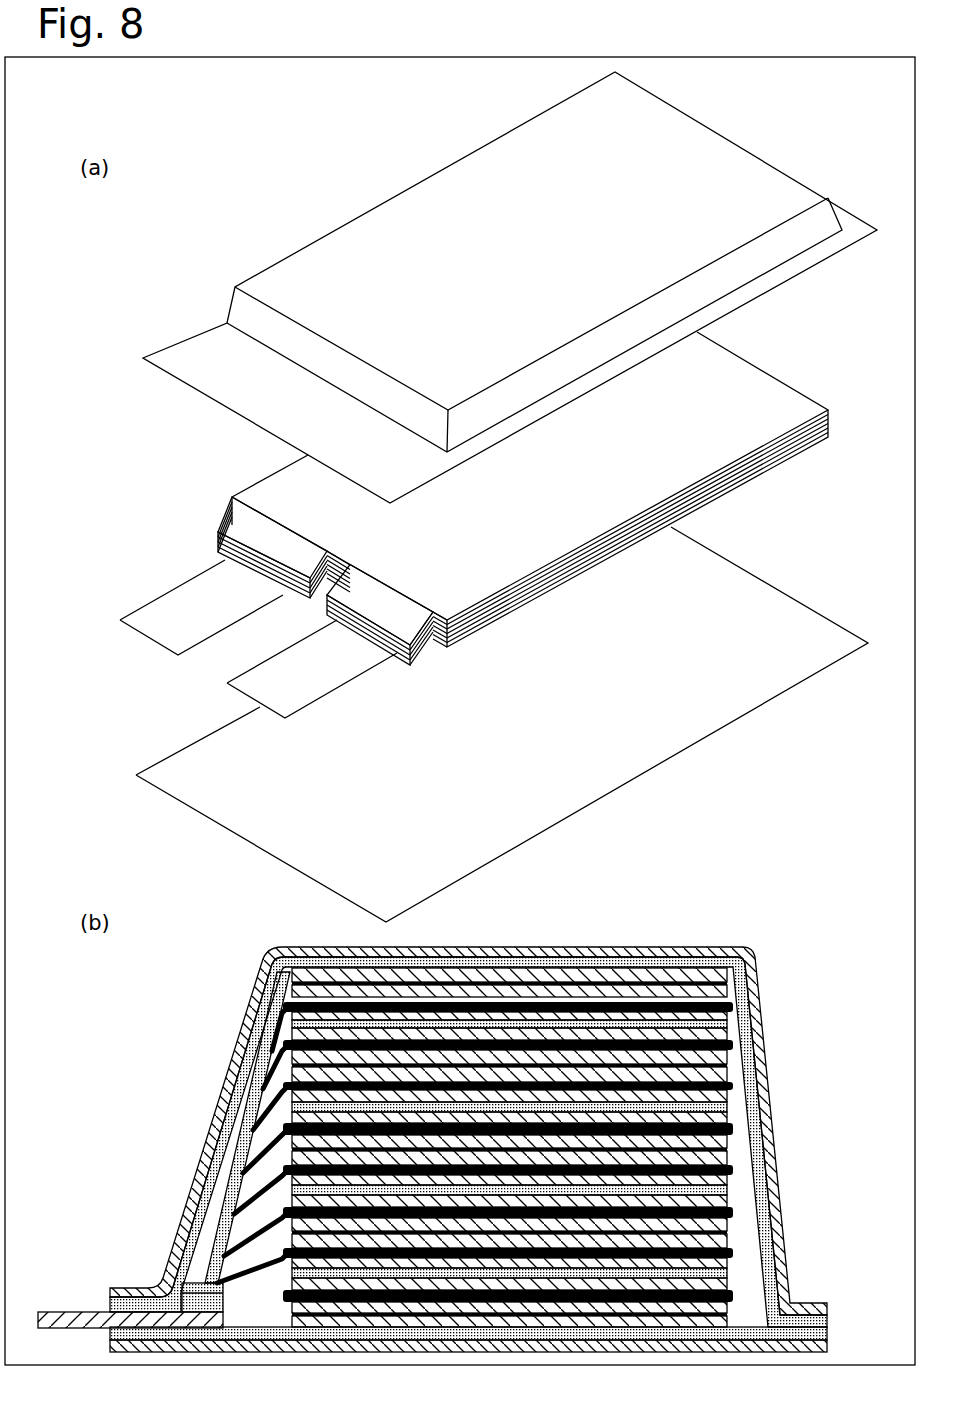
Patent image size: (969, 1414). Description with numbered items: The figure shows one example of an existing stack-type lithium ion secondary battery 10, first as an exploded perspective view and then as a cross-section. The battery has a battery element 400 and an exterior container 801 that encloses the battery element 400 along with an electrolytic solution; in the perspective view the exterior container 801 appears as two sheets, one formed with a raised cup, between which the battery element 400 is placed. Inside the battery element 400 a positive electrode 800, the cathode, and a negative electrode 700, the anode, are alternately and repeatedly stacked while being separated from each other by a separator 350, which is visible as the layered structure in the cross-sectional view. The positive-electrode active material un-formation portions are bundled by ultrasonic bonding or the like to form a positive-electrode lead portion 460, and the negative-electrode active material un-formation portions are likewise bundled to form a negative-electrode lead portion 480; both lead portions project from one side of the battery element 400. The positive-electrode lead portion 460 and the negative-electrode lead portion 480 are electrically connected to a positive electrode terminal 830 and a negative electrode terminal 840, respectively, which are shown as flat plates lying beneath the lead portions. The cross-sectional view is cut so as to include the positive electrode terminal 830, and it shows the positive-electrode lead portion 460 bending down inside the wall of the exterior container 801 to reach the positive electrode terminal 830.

The stack-type lithium ion secondary battery 10 is at (248, 208).
The exterior container 801 is at (788, 182).
The battery element 400 is at (783, 390).
The negative-electrode lead portion 480 is at (227, 523).
The positive-electrode lead portion 460 is at (410, 663).
The negative electrode terminal 840 is at (143, 612).
The positive electrode terminal 830 is at (243, 677).
The negative electrode 700 is at (720, 978).
The separator 350 is at (733, 995).
The positive electrode 800 is at (730, 1025).